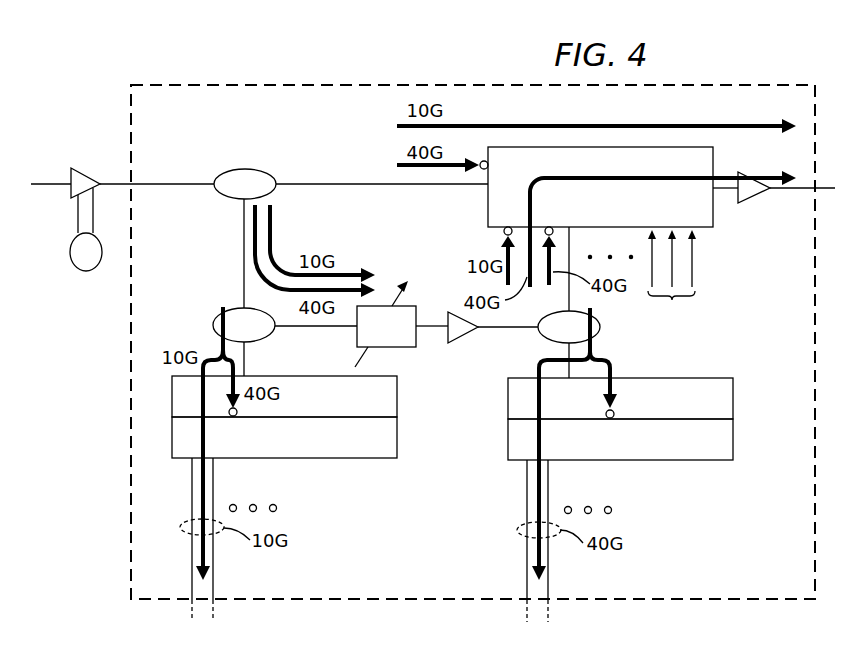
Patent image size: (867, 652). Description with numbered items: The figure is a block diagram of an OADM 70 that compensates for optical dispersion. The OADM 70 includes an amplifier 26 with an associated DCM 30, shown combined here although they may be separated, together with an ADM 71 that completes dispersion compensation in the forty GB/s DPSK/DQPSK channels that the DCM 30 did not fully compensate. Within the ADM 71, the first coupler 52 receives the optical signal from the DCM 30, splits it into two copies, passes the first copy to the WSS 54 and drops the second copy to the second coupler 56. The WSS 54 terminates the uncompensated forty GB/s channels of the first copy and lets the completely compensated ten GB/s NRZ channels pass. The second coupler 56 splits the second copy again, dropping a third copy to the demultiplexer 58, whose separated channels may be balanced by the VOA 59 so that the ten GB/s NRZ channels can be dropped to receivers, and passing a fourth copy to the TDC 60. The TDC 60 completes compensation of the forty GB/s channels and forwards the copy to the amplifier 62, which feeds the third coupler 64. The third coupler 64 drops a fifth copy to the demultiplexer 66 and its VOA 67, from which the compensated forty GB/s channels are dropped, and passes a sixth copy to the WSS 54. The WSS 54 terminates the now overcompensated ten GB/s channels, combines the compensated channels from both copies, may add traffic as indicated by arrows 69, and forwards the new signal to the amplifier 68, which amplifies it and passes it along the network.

The amplifier 26 is at (88, 169).
The DCM 30 is at (70, 251).
The first coupler 52 is at (234, 169).
The WSS 54 is at (488, 207).
The second coupler 56 is at (213, 323).
The demultiplexer 58 is at (398, 397).
The VOA 59 is at (398, 437).
The TDC 60 is at (357, 337).
The amplifier 62 is at (467, 338).
The third coupler 64 is at (600, 333).
The demultiplexer 66 is at (735, 398).
The VOA 67 is at (735, 438).
The amplifier 68 is at (755, 196).
The arrows 69 is at (672, 283).
The OADM 70 is at (98, 434).
The ADM 71 is at (755, 546).